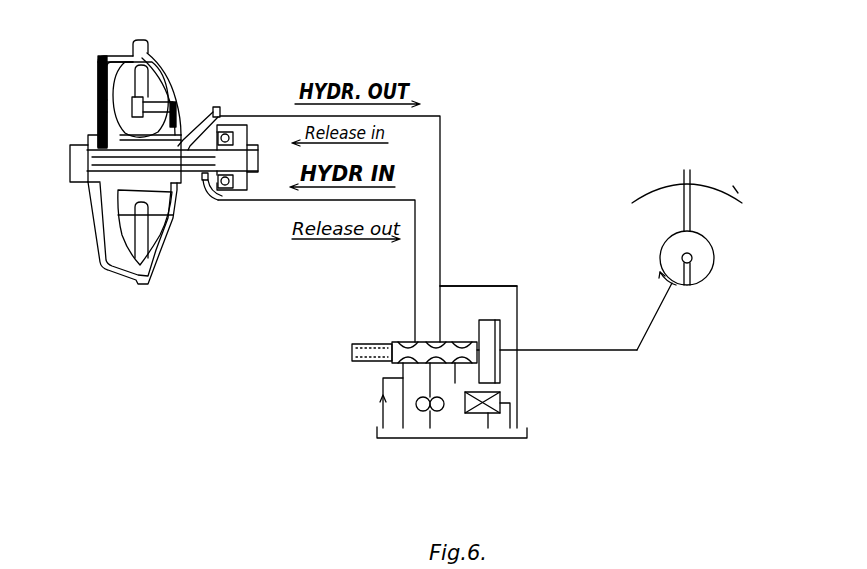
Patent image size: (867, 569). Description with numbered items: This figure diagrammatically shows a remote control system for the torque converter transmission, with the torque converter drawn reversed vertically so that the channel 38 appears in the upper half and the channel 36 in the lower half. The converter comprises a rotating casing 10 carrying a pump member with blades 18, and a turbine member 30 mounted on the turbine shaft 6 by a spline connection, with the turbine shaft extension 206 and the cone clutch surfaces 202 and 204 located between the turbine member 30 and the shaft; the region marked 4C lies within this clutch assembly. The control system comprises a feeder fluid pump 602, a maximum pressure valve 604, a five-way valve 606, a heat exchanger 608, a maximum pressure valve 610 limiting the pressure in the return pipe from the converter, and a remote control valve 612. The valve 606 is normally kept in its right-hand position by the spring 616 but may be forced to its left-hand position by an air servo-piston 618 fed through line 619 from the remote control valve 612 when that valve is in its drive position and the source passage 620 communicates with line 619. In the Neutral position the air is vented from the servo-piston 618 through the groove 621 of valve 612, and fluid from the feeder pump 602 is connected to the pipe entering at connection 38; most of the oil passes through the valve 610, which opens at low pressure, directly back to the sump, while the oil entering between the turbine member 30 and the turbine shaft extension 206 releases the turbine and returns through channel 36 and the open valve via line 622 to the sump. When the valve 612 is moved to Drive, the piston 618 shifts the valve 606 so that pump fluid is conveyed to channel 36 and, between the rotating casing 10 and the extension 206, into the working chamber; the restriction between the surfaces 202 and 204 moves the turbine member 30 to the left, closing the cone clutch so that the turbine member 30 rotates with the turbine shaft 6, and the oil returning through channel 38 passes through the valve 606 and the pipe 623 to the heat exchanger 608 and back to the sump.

The rotating casing 10 is at (103, 130).
The turbine member 30 is at (106, 88).
The cone clutch surface 202 is at (148, 42).
The cone clutch surface 204 is at (118, 62).
The turbine shaft extension 206 is at (98, 106).
The pump blades 18 is at (156, 85).
The channel 38 is at (216, 107).
The turbine shaft 6 is at (172, 157).
The piston 4C is at (148, 190).
The channel 36 is at (218, 207).
The maximum pressure valve 610 is at (477, 281).
The 5-way valve 606 is at (396, 341).
The spring 616 is at (354, 352).
The air servo-piston 618 is at (501, 326).
The maximum pressure valve 604 is at (382, 400).
The line 622 is at (401, 421).
The feeder fluid pump 602 is at (440, 418).
The pipe 623 is at (455, 384).
The heat exchanger 608 is at (489, 418).
The remote control valve 612 is at (667, 255).
The groove 621 is at (662, 283).
The source passage 620 is at (691, 273).
The line 619 is at (657, 313).